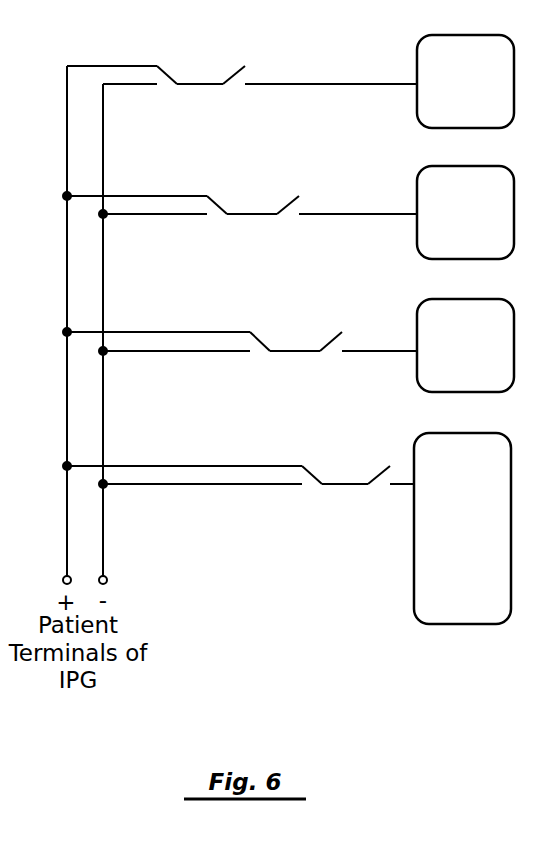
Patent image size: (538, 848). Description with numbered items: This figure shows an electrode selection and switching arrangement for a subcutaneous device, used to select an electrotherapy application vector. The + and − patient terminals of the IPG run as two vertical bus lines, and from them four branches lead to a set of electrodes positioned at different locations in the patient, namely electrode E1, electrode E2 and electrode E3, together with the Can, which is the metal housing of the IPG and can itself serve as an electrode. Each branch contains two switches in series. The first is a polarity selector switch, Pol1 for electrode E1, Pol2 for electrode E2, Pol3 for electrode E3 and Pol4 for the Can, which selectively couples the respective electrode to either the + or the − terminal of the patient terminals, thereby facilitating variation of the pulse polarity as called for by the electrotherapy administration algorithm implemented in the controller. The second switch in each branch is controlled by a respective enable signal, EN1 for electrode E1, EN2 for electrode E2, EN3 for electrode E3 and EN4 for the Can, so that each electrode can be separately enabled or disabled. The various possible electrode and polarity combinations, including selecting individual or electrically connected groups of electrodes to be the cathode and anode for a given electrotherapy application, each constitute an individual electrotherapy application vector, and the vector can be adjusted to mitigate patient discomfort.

The polarity selector switch Pol1 is at (168, 55).
The enable signal EN1 is at (234, 55).
The polarity selector switch Pol2 is at (218, 185).
The enable signal EN2 is at (288, 185).
The polarity selector switch Pol3 is at (261, 321).
The enable signal EN3 is at (331, 321).
The polarity selector switch Pol4 is at (313, 455).
The enable signal EN4 is at (379, 455).
The electrode E1 is at (465, 81).
The electrode E2 is at (465, 212).
The electrode E3 is at (465, 345).
The can Can is at (462, 528).